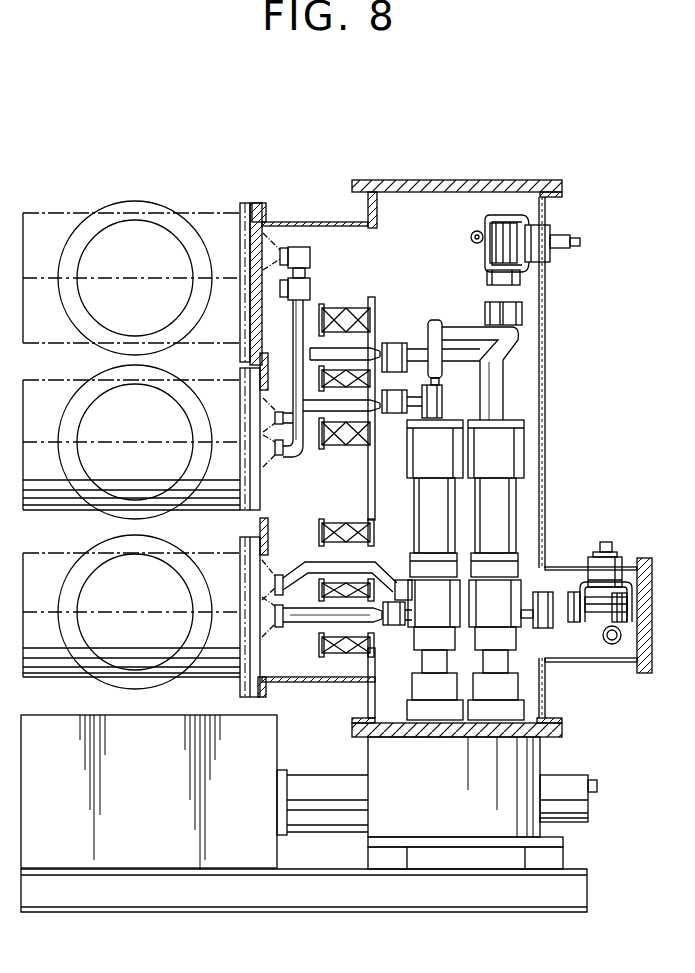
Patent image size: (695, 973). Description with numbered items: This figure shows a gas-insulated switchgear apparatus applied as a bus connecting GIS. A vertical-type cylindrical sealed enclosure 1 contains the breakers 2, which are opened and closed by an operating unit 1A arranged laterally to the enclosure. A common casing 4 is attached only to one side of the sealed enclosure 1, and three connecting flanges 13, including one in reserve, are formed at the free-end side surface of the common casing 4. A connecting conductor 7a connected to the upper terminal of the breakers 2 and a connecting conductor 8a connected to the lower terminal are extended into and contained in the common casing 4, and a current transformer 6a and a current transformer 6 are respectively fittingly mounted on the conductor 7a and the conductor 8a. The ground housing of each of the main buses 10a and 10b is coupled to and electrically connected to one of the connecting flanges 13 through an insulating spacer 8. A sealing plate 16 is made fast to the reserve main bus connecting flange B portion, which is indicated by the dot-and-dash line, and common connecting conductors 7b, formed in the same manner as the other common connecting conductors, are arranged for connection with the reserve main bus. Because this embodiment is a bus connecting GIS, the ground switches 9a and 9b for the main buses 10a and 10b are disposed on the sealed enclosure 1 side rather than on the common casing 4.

The sealed enclosure 1 is at (546, 387).
The operating unit 1A is at (123, 858).
The breakers 2 is at (503, 507).
The common casing 4 is at (302, 682).
The current transformer 6 is at (345, 655).
The current transformer 6a is at (348, 306).
The connecting conductor 7a is at (460, 349).
The common connecting conductors 7b is at (305, 312).
The insulating spacer 8 is at (241, 686).
The connecting conductor 8a is at (328, 623).
The ground switch 9a is at (517, 278).
The ground switch 9b is at (576, 625).
The main bus 10a is at (103, 400).
The main bus 10b is at (105, 570).
The connecting flanges 13 is at (263, 203).
The sealing plate 16 is at (242, 207).
The reserve main bus connecting flange portion B is at (268, 207).